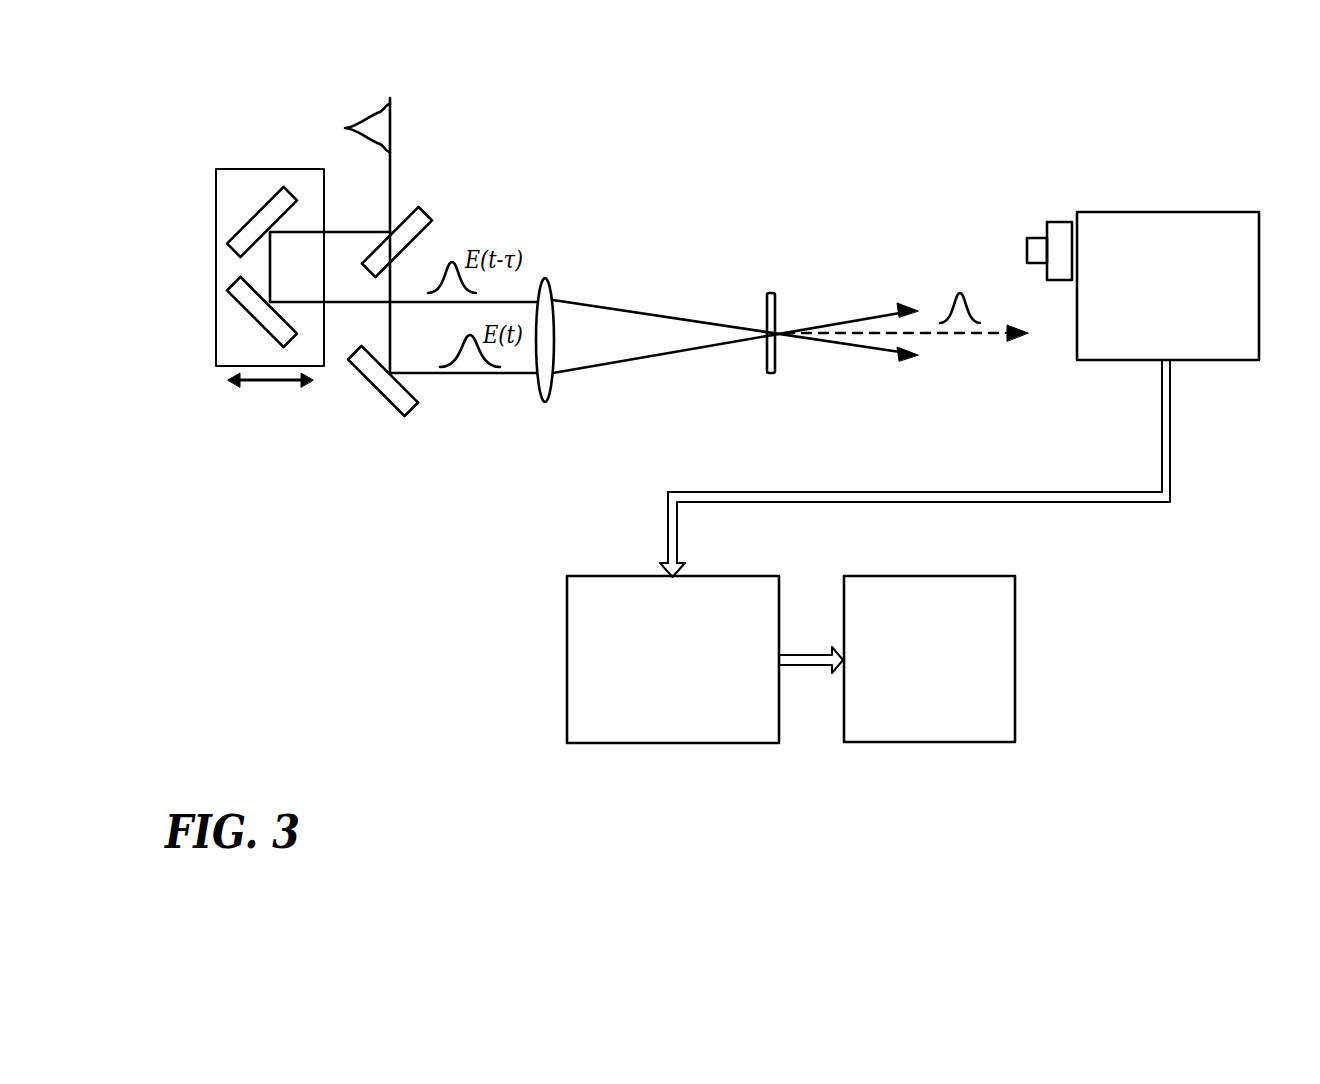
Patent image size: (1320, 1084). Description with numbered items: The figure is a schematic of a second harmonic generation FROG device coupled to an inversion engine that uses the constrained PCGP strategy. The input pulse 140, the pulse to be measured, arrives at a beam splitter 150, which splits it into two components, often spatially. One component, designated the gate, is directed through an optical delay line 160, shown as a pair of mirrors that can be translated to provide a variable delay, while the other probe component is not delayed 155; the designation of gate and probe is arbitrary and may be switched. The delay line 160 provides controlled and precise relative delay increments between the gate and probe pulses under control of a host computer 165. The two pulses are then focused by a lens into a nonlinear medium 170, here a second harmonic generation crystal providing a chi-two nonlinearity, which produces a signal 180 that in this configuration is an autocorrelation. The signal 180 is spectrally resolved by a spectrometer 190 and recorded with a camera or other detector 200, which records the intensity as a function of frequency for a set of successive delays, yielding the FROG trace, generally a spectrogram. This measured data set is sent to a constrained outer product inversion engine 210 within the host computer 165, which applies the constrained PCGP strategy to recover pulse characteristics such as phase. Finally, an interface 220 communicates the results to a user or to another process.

The input pulse 140 is at (440, 235).
The beam splitter 150 is at (425, 213).
The undelayed probe component 155 is at (393, 410).
The optical delay line 160 is at (236, 169).
The host computer 165 is at (673, 688).
The nonlinear medium 170 is at (776, 298).
The signal 180 is at (973, 333).
The spectrometer 190 is at (1218, 212).
The camera 200 is at (1058, 221).
The constrained outer product inversion engine 210 is at (742, 743).
The interface 220 is at (985, 743).